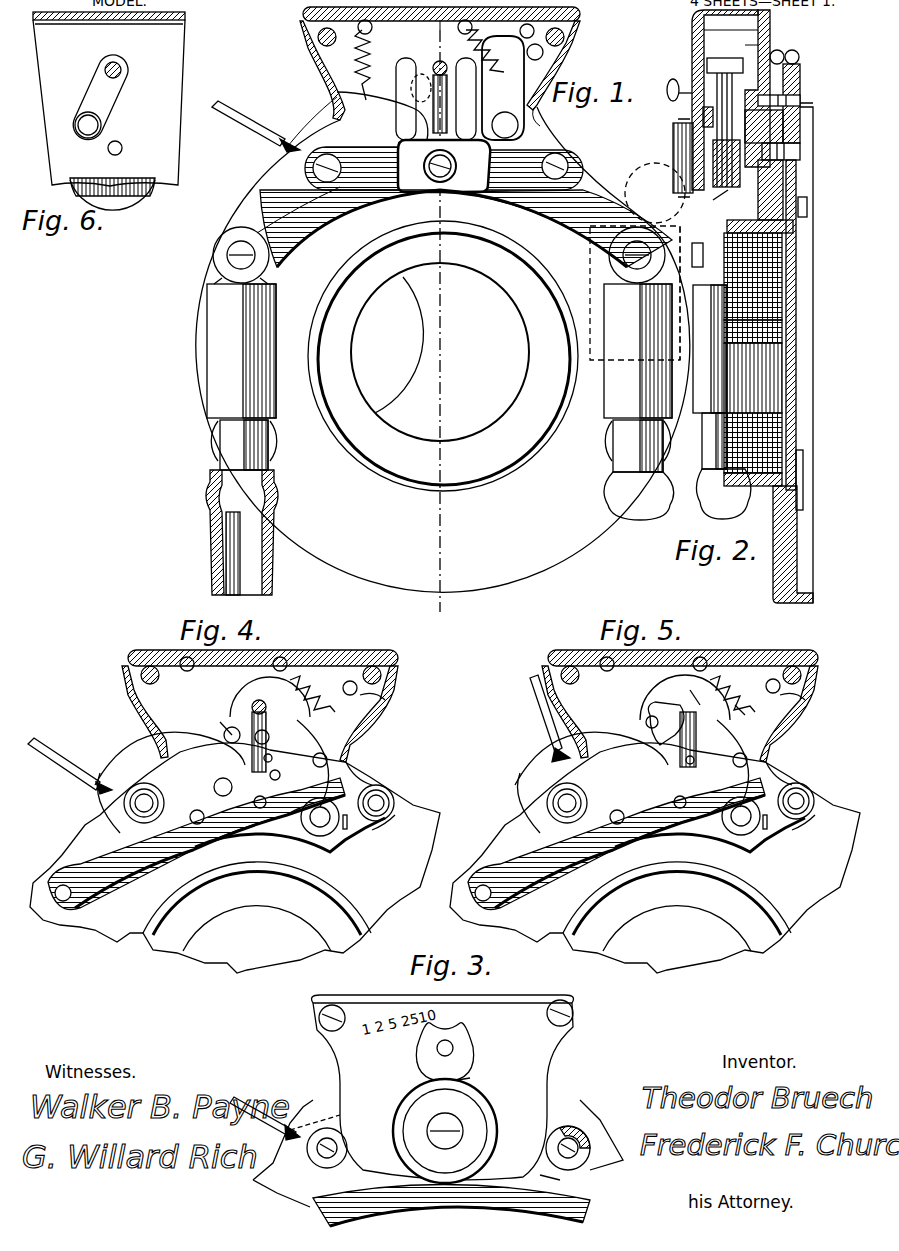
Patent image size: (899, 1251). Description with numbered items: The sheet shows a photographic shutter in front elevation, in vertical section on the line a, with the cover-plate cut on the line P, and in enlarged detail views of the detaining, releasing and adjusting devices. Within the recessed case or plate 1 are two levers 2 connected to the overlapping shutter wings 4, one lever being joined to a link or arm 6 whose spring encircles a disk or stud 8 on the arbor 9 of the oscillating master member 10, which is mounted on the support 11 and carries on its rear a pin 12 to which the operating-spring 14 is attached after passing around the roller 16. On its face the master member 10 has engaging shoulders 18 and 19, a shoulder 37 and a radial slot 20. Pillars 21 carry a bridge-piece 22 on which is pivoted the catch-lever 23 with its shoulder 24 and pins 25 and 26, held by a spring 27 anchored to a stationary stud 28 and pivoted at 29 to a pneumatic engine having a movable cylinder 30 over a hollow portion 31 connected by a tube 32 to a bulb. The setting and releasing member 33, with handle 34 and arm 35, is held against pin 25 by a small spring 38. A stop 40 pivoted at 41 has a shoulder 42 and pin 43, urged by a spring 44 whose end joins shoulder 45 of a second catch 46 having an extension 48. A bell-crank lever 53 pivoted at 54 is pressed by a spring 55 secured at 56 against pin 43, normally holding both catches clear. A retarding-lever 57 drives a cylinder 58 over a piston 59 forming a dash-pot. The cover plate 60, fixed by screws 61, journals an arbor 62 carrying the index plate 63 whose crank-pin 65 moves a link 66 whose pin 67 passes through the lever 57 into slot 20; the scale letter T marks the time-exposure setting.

In FIG. 1, the case or plate 1 is at (443, 349).
In FIG. 2, the case or plate 1 is at (797, 548).
In FIG. 4, the case or plate 1 is at (235, 858).
In FIG. 5, the case or plate 1 is at (655, 858).
In FIG. 2, the levers 2 is at (807, 212).
In FIG. 1, the shutter wings or plates 4 is at (432, 352).
In FIG. 2, the shutter wings or plates 4 is at (782, 312).
In FIG. 4, the shutter wings or plates 4 is at (257, 909).
In FIG. 5, the shutter wings or plates 4 is at (677, 907).
In FIG. 2, the link or arm 6 is at (796, 183).
In FIG. 2, the disk or stud 8 is at (800, 78).
In FIG. 2, the arbor 9 is at (800, 98).
In FIG. 4, the arbor 9 is at (269, 760).
In FIG. 5, the arbor 9 is at (689, 763).
In FIG. 1, the master member 10 is at (400, 118).
In FIG. 2, the master member 10 is at (740, 50).
In FIG. 4, the master member 10 is at (266, 697).
In FIG. 5, the master member 10 is at (663, 718).
In FIG. 1, the plate or support 11 is at (436, 80).
In FIG. 4, the plate or support 11 is at (160, 684).
In FIG. 5, the plate or support 11 is at (609, 673).
In FIG. 2, the pin or projection 12 is at (800, 152).
In FIG. 4, the pin or projection 12 is at (214, 780).
In FIG. 2, the operating-spring 14 is at (781, 51).
In FIG. 2, the pulley or roller 16 is at (799, 53).
In FIG. 4, the shoulder or engaging portion 18 is at (265, 780).
In FIG. 4, the shoulder or engaging portion 19 is at (268, 712).
In FIG. 5, the shoulder or engaging portion 19 is at (703, 693).
In FIG. 2, the radial slot 20 is at (733, 148).
In FIG. 5, the radial slot 20 is at (690, 734).
In FIG. 1, the pillars or studs 21 is at (325, 175).
In FIG. 4, the pillars or studs 21 is at (388, 795).
In FIG. 5, the pillars or studs 21 is at (806, 790).
In FIG. 3, the pillars or studs 21 is at (580, 1135).
In FIG. 1, the bridge-piece 22 is at (380, 170).
In FIG. 1, the catch-lever 23 is at (352, 212).
In FIG. 4, the catch-lever 23 is at (196, 844).
In FIG. 5, the catch-lever 23 is at (616, 844).
In FIG. 3, the catch-lever 23 is at (451, 1205).
In FIG. 4, the engaging shoulder or projection 24 is at (277, 806).
In FIG. 5, the engaging shoulder or projection 24 is at (695, 800).
In FIG. 4, the pin 25 is at (195, 824).
In FIG. 5, the pin 25 is at (615, 824).
In FIG. 4, the pin 26 is at (313, 763).
In FIG. 5, the pin 26 is at (733, 763).
In FIG. 1, the spring 27 is at (491, 61).
In FIG. 4, the spring 27 is at (313, 688).
In FIG. 5, the spring 27 is at (737, 686).
In FIG. 1, the stationary stud or projection 28 is at (472, 27).
In FIG. 4, the stationary stud or projection 28 is at (284, 660).
In FIG. 5, the stationary stud or projection 28 is at (705, 660).
In FIG. 1, the pivot 29 is at (233, 262).
In FIG. 2, the pivot 29 is at (707, 293).
In FIG. 4, the pivot 29 is at (240, 725).
In FIG. 1, the movable cylinder 30 is at (276, 290).
In FIG. 2, the movable cylinder 30 is at (710, 349).
In FIG. 1, the stationary hollow portion 31 is at (250, 444).
In FIG. 2, the stationary hollow portion 31 is at (723, 466).
In FIG. 1, the tube 32 is at (272, 562).
In FIG. 1, the setting and releasing member 33 is at (311, 123).
In FIG. 4, the setting and releasing member 33 is at (143, 793).
In FIG. 5, the setting and releasing member 33 is at (573, 793).
In FIG. 3, the setting and releasing member 33 is at (330, 1127).
In FIG. 1, the operating-handle 34 is at (228, 125).
In FIG. 4, the operating-handle 34 is at (70, 742).
In FIG. 5, the operating-handle 34 is at (542, 700).
In FIG. 3, the operating-handle 34 is at (284, 1118).
In FIG. 4, the inwardly-extending arm 35 is at (170, 744).
In FIG. 5, the inwardly-extending arm 35 is at (591, 758).
In FIG. 4, the shoulder or projection 37 is at (216, 723).
In FIG. 4, the small spring 38 is at (103, 815).
In FIG. 5, the small spring 38 is at (520, 810).
In FIG. 3, the small spring 38 is at (310, 1190).
In FIG. 1, the stop or catch 40 is at (535, 33).
In FIG. 4, the stop or catch 40 is at (352, 681).
In FIG. 5, the stop or catch 40 is at (775, 679).
In FIG. 4, the pivot 41 is at (315, 837).
In FIG. 5, the pivot 41 is at (735, 836).
In FIG. 5, the shoulder or projection 42 is at (731, 713).
In FIG. 1, the pin or projection 43 is at (566, 33).
In FIG. 4, the pin or projection 43 is at (385, 672).
In FIG. 5, the pin or projection 43 is at (803, 670).
In FIG. 4, the spring 44 is at (345, 830).
In FIG. 5, the spring 44 is at (765, 830).
In FIG. 4, the shoulder 45 is at (389, 833).
In FIG. 5, the shoulder 45 is at (806, 833).
In FIG. 1, the stop or catch 46 is at (538, 110).
In FIG. 4, the stop or catch 46 is at (365, 745).
In FIG. 5, the stop or catch 46 is at (778, 740).
In FIG. 1, the extension or arm 48 is at (542, 56).
In FIG. 4, the extension or arm 48 is at (380, 700).
In FIG. 5, the extension or arm 48 is at (800, 698).
In FIG. 1, the bell-crank lever 53 is at (510, 92).
In FIG. 1, the pivot 54 is at (510, 150).
In FIG. 1, the spring 55 is at (393, 66).
In FIG. 1, the securing point 56 is at (385, 8).
In FIG. 4, the securing point 56 is at (187, 672).
In FIG. 5, the securing point 56 is at (607, 672).
In FIG. 1, the retarding-lever 57 is at (452, 182).
In FIG. 2, the retarding-lever 57 is at (713, 200).
In FIG. 3, the retarding-lever 57 is at (545, 1188).
In FIG. 1, the movable cylinder 58 is at (637, 290).
In FIG. 1, the piston or abutment 59 is at (628, 442).
In FIG. 2, the casing or cover plate 60 is at (692, 14).
In FIG. 6, the casing or cover plate 60 is at (109, 99).
In FIG. 4, the casing or cover plate 60 is at (260, 706).
In FIG. 5, the casing or cover plate 60 is at (680, 706).
In FIG. 3, the casing or cover plate 60 is at (500, 1000).
In FIG. 3, the screws 61 is at (572, 1008).
In FIG. 2, the stud or arbor 62 is at (673, 150).
In FIG. 6, the stud or arbor 62 is at (122, 148).
In FIG. 3, the stud or arbor 62 is at (455, 1125).
In FIG. 3, the index plate or arm 63 is at (452, 1043).
In FIG. 2, the crank-pin 65 is at (703, 115).
In FIG. 6, the crank-pin 65 is at (85, 120).
In FIG. 3, the crank-pin 65 is at (462, 1080).
In FIG. 2, the link 66 is at (671, 86).
In FIG. 6, the link 66 is at (95, 92).
In FIG. 1, the pin 67 is at (448, 55).
In FIG. 2, the pin 67 is at (725, 52).
In FIG. 6, the pin 67 is at (122, 67).
In FIG. 4, the pin 67 is at (258, 745).
In FIG. 5, the pin 67 is at (644, 726).
In FIG. 1, the section line a is at (447, 321).
In FIG. 2, the section line P is at (708, 43).
In FIG. 3, the time-exposure letter T is at (520, 1050).